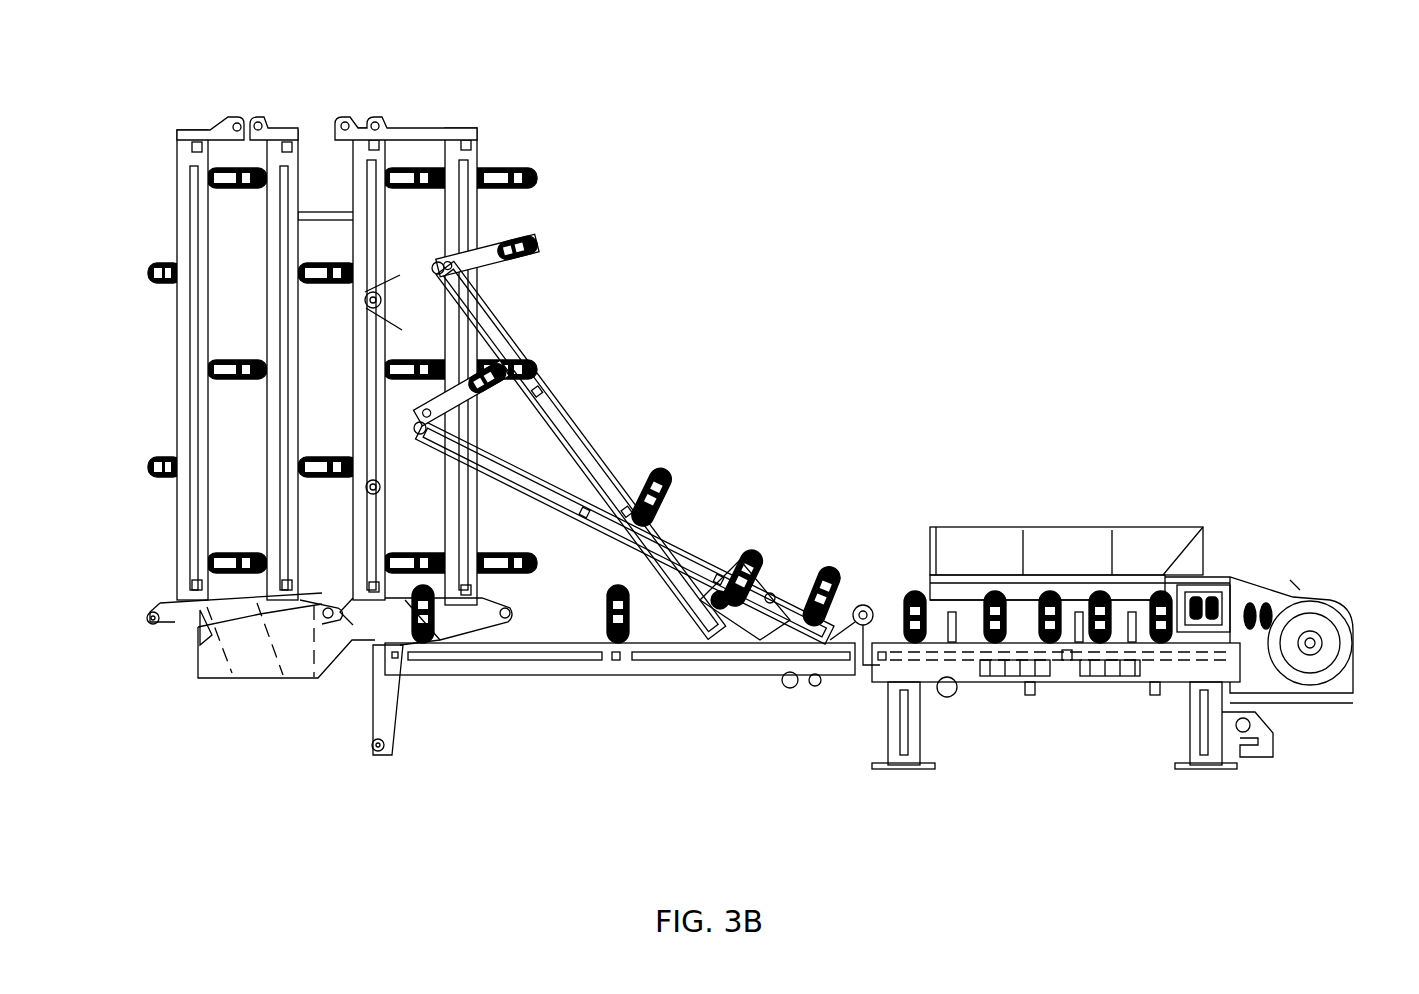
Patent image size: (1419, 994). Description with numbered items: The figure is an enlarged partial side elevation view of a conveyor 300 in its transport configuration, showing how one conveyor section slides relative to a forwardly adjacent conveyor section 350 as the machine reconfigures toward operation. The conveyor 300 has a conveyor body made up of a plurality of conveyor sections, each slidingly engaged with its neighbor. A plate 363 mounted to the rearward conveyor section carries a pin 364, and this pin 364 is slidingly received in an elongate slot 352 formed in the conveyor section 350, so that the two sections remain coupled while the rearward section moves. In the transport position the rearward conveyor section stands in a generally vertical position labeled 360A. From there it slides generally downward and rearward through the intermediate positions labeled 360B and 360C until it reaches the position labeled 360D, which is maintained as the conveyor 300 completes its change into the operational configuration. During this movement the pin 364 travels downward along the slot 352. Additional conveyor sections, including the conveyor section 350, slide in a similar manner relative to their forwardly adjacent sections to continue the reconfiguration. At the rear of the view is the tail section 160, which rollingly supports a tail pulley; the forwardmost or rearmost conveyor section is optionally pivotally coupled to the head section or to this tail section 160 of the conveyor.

The conveyor 300 is at (1335, 158).
The conveyor section 350 is at (352, 187).
The elongate slot 352 is at (391, 213).
The pin 364 is at (380, 332).
The generally vertical position of conveyor section 360A is at (478, 214).
The intermediate position of conveyor section 360B is at (580, 394).
The intermediate position of conveyor section 360C is at (723, 557).
The final position of conveyor section 360D is at (563, 674).
The plate 363 is at (523, 335).
The tail section 160 is at (1255, 540).